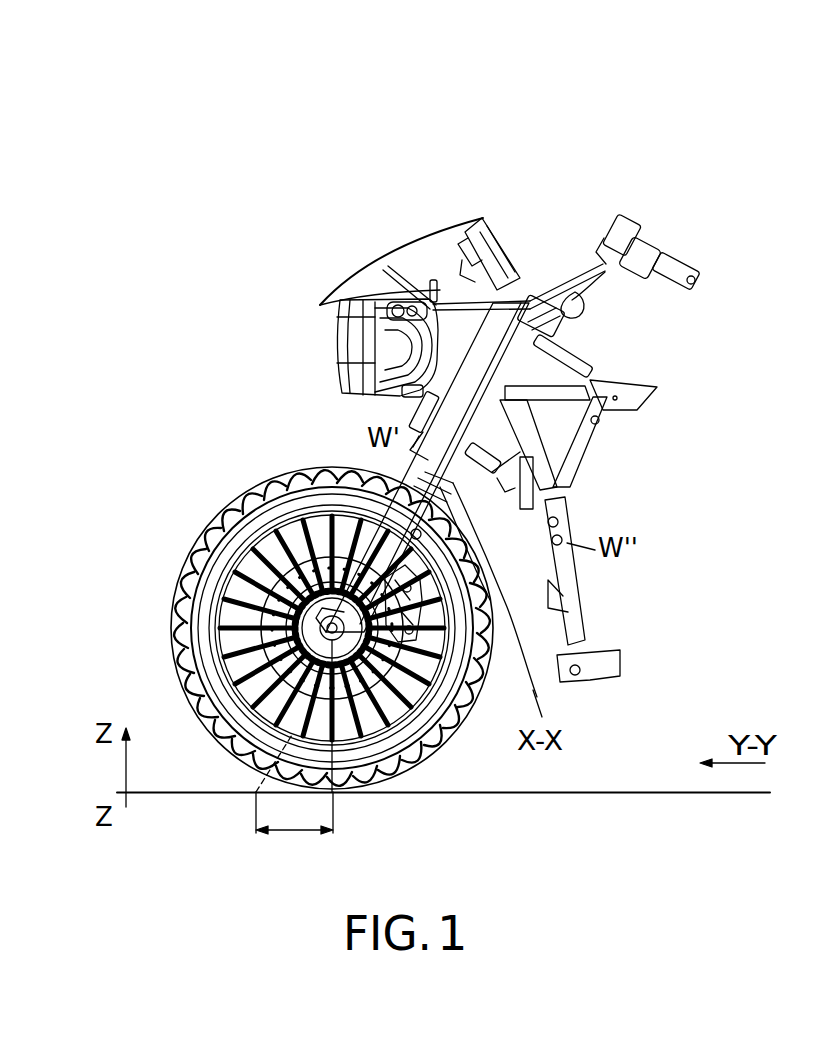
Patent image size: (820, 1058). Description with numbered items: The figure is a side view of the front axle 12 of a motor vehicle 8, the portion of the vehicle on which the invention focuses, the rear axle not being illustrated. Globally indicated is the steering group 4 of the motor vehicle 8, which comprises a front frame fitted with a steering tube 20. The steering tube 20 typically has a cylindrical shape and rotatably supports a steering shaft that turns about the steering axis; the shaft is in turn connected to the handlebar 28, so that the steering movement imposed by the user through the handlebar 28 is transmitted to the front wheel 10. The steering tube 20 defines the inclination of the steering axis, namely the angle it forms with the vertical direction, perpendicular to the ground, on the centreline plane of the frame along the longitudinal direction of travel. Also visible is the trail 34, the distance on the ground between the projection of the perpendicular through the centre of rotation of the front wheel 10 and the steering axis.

The steering group 4 is at (521, 245).
The motor vehicle 8 is at (753, 322).
The front wheel 10 is at (211, 524).
The front axle 12 is at (304, 378).
The steering tube 20 is at (617, 382).
The handlebar 28 is at (652, 240).
The trail 34 is at (294, 829).